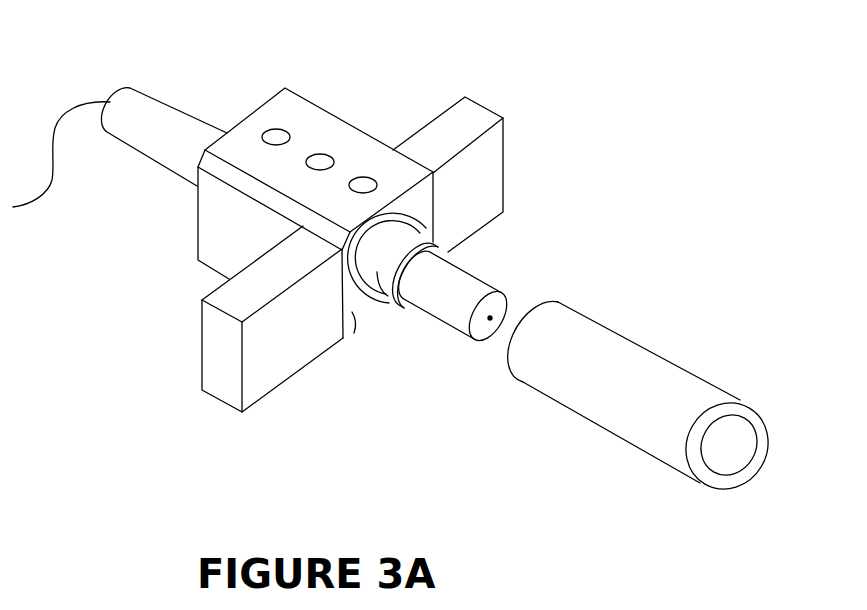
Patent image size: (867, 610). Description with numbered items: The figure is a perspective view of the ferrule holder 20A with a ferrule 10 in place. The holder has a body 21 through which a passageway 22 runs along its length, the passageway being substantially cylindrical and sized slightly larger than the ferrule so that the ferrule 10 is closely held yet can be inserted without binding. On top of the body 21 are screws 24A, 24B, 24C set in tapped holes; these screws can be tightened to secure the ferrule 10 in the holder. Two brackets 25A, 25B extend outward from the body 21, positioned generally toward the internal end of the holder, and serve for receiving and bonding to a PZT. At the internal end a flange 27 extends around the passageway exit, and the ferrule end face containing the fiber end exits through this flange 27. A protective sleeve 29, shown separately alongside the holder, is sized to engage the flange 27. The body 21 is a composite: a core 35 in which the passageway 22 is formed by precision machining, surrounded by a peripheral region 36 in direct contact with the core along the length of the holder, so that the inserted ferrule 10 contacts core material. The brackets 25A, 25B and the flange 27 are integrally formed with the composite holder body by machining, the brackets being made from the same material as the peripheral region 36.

The ferrule 10 is at (482, 290).
The ferrule holder 20A is at (106, 354).
The body 21 is at (224, 229).
The passageway 22 is at (417, 232).
The screw 24A is at (278, 136).
The screw 24B is at (316, 163).
The screw 24C is at (363, 184).
The bracket 25A is at (485, 158).
The bracket 25B is at (228, 373).
The flange 27 is at (421, 310).
The protective sleeve 29 is at (618, 328).
The core 35 is at (385, 312).
The peripheral region 36 is at (393, 308).